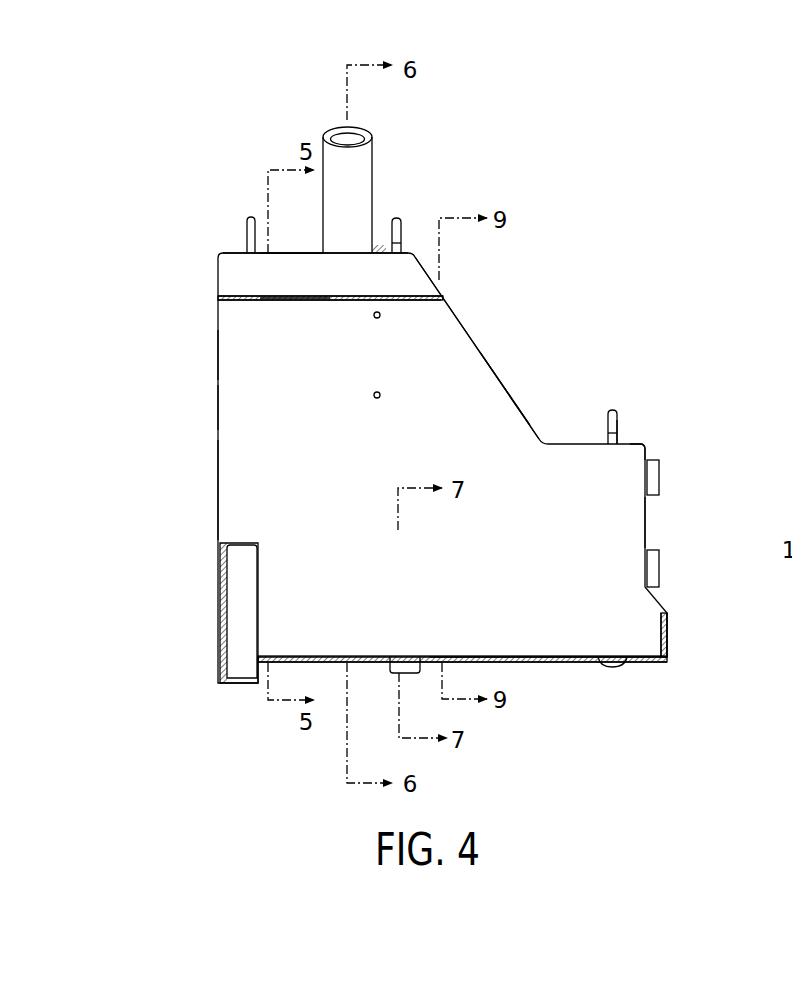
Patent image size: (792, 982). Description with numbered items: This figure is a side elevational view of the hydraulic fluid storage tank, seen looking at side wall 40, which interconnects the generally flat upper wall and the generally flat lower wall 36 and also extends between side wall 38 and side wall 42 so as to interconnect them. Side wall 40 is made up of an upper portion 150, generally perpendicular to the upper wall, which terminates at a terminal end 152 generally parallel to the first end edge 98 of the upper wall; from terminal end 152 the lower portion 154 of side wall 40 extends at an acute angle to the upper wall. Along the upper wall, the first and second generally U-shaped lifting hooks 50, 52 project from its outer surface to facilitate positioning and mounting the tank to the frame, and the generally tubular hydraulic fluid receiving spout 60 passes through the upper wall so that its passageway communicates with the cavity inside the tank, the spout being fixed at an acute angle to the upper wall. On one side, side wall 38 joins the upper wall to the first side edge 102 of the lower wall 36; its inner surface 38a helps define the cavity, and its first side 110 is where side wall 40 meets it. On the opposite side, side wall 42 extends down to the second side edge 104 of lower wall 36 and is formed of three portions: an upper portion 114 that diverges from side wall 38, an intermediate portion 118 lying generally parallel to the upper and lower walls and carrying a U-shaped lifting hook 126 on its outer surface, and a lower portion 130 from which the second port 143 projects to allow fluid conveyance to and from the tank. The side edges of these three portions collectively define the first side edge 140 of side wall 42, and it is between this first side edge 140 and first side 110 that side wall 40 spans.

The side wall 40 is at (498, 587).
The hydraulic fluid receiving spout 60 is at (368, 121).
The lifting hook 52 is at (247, 218).
The first end edge 98 is at (315, 251).
The lifting hook 50 is at (401, 233).
The upper portion 150 is at (242, 268).
The terminal end 152 is at (290, 303).
The inner surface 38a is at (218, 372).
The side wall 38 is at (218, 405).
The first side 110 is at (219, 495).
The first side edge 102 is at (220, 600).
The upper portion 114 is at (488, 358).
The side wall 42 is at (515, 395).
The intermediate portion 118 is at (582, 444).
The U-shaped lifting hook 126 is at (617, 425).
The first side edge 140 is at (656, 438).
The lower portion 130 is at (645, 523).
The second port 143 is at (662, 573).
The lower portion 154 is at (547, 645).
The second side edge 104 is at (672, 635).
The lower wall 36 is at (384, 671).